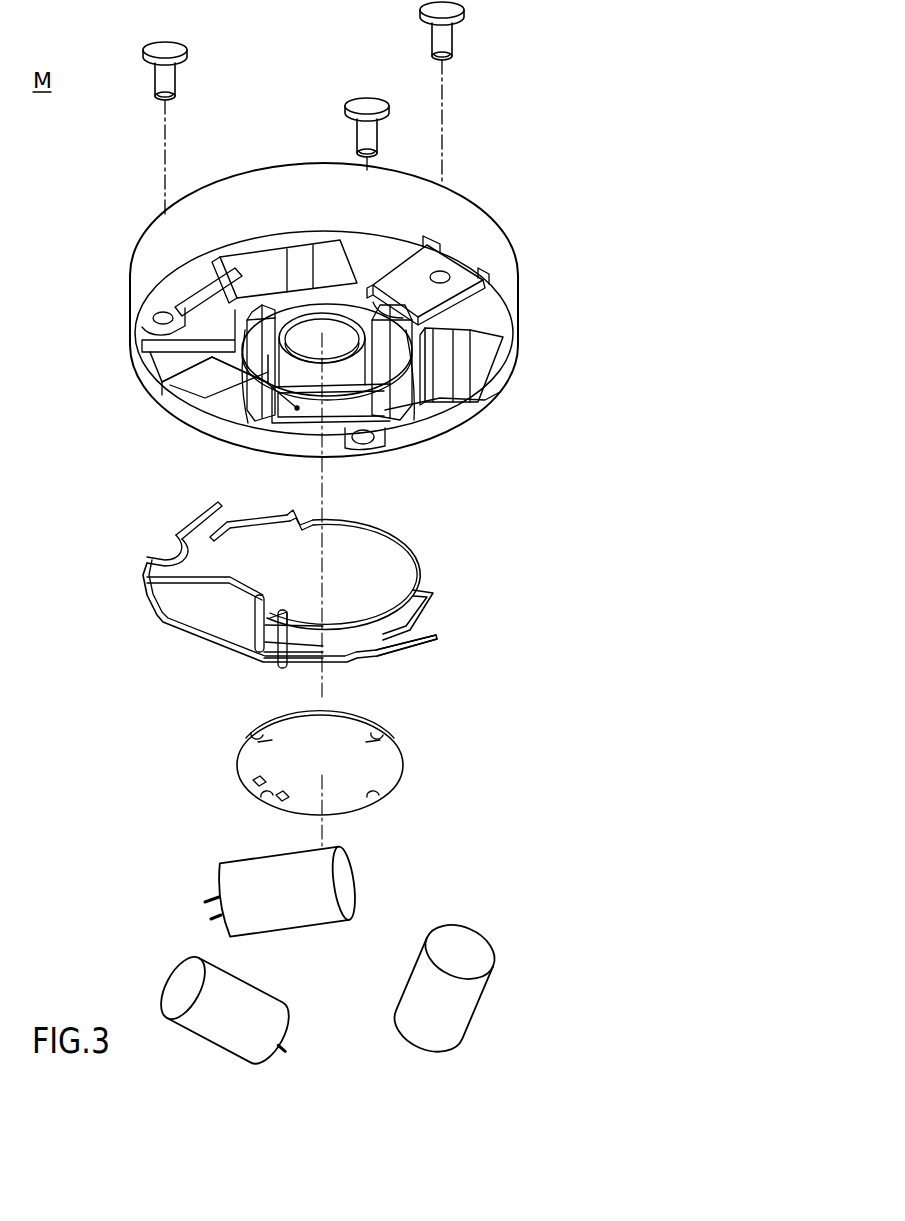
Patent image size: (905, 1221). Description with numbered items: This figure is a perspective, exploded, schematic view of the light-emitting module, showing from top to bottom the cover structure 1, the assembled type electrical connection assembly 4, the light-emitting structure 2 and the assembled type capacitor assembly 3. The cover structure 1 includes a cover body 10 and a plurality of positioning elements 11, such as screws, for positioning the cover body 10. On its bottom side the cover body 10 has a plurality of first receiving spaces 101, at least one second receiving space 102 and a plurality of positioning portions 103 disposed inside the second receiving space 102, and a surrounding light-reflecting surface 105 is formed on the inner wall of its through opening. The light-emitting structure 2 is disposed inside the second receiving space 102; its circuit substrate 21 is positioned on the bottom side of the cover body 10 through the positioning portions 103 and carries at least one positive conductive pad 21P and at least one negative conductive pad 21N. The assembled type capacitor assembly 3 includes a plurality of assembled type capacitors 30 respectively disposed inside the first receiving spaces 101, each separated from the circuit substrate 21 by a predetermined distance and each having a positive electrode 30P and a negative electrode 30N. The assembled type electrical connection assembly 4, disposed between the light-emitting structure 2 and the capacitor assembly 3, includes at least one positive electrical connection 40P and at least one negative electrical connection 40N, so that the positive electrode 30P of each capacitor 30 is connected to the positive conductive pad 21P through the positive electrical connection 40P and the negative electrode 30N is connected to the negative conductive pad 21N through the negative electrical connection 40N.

The cover structure 1 is at (357, 431).
The cover body 10 is at (493, 238).
The positioning elements 11 is at (172, 82).
The first receiving spaces 101 is at (262, 268).
The second receiving space 102 is at (316, 378).
The positioning portions 103 is at (268, 400).
The surrounding light-reflecting surface 105 is at (343, 350).
The assembled type electrical connection assembly 4 is at (349, 585).
The negative electrical connection 40N is at (428, 613).
The positive electrical connection 40P is at (440, 638).
The light-emitting structure 2 is at (335, 776).
The circuit substrate 21 is at (387, 778).
The positive conductive pad 21P is at (250, 788).
The negative conductive pad 21N is at (270, 800).
The assembled type capacitor assembly 3 is at (347, 959).
The assembled type capacitor 30 is at (347, 878).
The negative electrode 30N is at (207, 899).
The positive electrode 30P is at (211, 919).